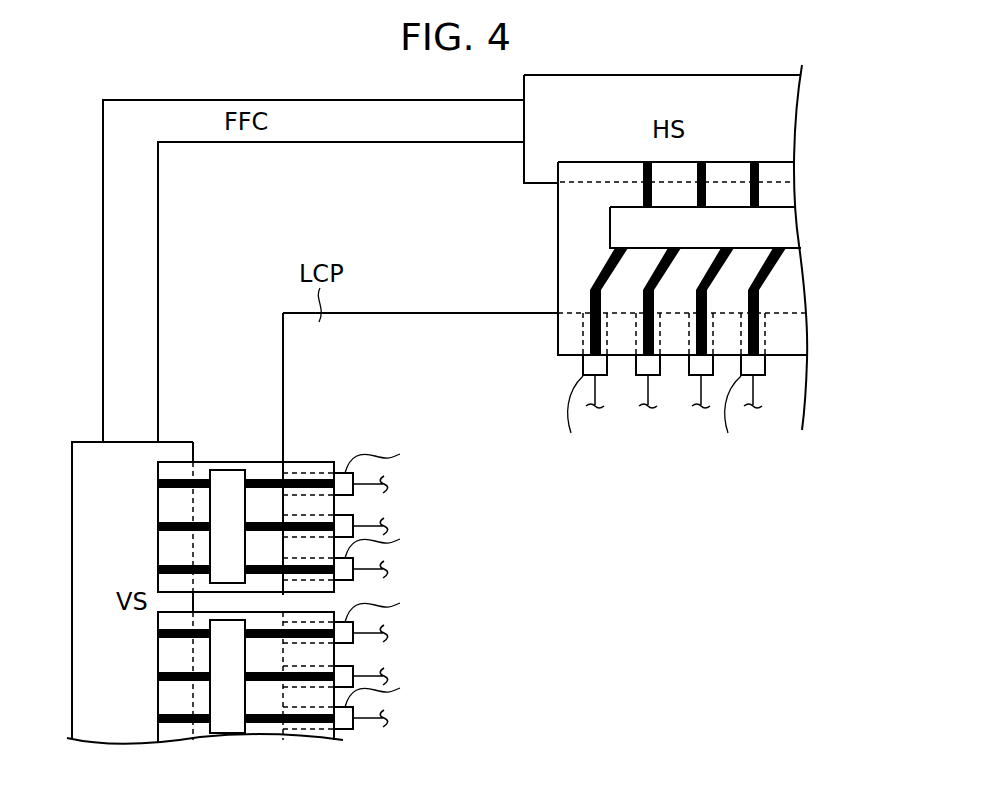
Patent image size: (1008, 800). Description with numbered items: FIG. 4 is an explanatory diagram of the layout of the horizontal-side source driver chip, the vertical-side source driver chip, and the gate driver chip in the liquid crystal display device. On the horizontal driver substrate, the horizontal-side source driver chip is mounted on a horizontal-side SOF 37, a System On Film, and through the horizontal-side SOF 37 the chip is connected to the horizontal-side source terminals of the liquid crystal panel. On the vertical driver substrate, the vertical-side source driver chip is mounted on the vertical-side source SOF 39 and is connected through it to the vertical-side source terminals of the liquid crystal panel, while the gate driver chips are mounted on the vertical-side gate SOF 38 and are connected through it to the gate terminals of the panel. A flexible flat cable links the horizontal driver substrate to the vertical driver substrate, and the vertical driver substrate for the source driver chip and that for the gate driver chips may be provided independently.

The horizontal-side SOF 37 is at (797, 282).
The vertical-side gate SOF 38 is at (205, 735).
The vertical-side source SOF 39 is at (255, 462).